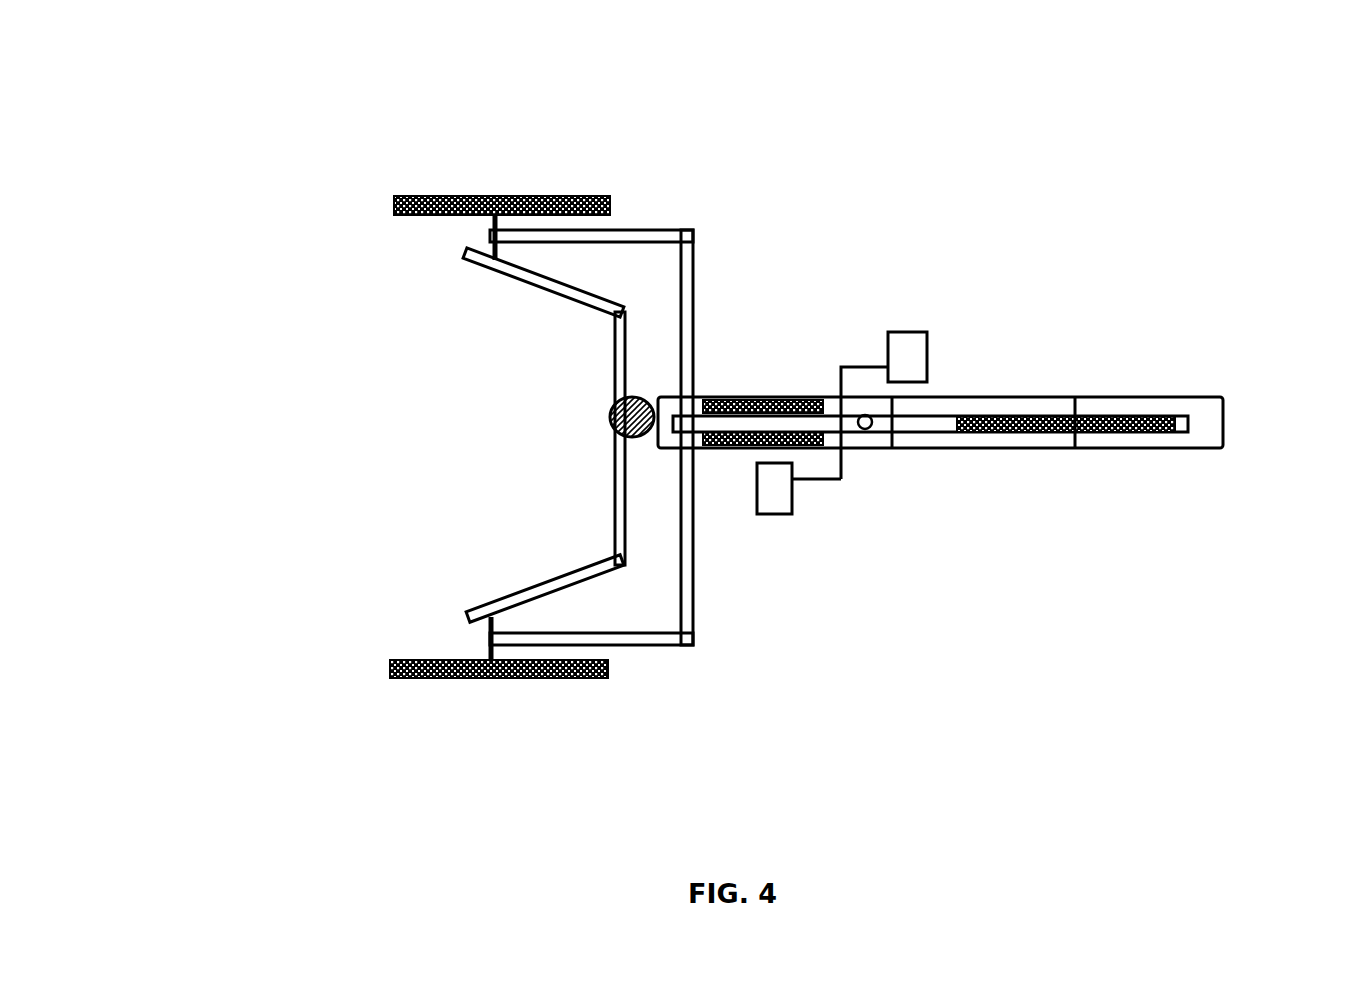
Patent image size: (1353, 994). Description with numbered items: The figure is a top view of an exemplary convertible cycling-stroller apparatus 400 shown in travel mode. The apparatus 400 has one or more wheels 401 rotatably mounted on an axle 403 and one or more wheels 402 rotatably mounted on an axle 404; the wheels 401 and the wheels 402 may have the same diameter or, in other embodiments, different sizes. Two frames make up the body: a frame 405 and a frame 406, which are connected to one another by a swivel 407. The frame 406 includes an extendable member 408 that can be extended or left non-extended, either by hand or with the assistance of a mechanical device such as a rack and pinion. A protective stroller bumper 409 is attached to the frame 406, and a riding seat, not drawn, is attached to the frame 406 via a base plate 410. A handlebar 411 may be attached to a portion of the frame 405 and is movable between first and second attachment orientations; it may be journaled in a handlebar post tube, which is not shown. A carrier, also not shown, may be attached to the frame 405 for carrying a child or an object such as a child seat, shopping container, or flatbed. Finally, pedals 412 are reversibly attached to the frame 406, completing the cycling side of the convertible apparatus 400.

The convertible cycling-stroller apparatus 400 is at (258, 80).
The wheels 401 is at (395, 197).
The wheels 402 is at (1142, 433).
The axle 403 is at (492, 234).
The axle 404 is at (1075, 448).
The frame 405 is at (615, 317).
The frame 406 is at (958, 398).
The swivel 407 is at (645, 437).
The extendable member 408 is at (758, 400).
The protective stroller bumper 409 is at (1212, 428).
The base plate 410 is at (875, 430).
The handlebar 411 is at (700, 261).
The pedals 412 is at (907, 332).